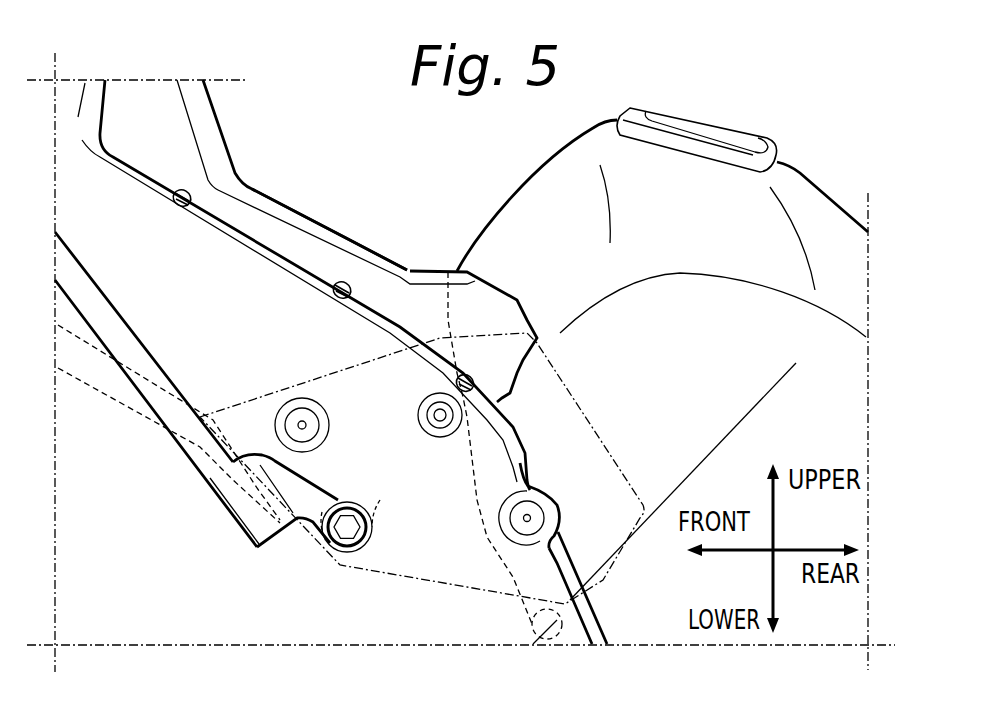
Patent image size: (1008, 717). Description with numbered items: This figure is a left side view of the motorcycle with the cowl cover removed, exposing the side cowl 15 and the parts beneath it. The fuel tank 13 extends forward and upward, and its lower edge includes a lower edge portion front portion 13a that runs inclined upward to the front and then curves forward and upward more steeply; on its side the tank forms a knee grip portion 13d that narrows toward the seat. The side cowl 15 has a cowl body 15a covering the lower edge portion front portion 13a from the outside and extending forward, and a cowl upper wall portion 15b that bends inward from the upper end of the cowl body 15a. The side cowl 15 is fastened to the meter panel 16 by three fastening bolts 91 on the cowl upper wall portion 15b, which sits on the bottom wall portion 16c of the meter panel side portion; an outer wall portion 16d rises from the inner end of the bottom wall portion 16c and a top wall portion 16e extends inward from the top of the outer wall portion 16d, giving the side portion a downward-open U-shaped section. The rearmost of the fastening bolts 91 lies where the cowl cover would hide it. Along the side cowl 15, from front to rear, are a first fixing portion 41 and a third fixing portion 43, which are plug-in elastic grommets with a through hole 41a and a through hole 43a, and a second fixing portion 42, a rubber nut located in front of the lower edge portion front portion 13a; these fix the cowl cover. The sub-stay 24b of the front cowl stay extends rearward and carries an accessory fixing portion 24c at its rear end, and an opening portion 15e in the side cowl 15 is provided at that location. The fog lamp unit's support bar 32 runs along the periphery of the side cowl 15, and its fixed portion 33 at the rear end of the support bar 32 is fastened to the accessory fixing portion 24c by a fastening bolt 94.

The fuel tank 13 is at (519, 200).
The lower edge portion front portion 13a is at (590, 620).
The knee grip portion 13d is at (838, 436).
The side cowl 15 is at (304, 285).
The cowl body 15a is at (273, 332).
The cowl upper wall portion 15b is at (257, 240).
The opening portion 15e is at (337, 560).
The meter panel 16 is at (286, 193).
The bottom wall portion 16c is at (290, 253).
The outer wall portion 16d is at (352, 258).
The top wall portion 16e is at (388, 255).
The sub-stay 24b is at (68, 372).
The accessory fixing portion 24c is at (360, 500).
The support bar 32 is at (200, 467).
The fixed portion 33 is at (313, 478).
The first fixing portion 41 is at (291, 394).
The through hole 41a is at (312, 417).
The second fixing portion 42 is at (422, 410).
The third fixing portion 43 is at (520, 535).
The through hole 43a is at (530, 512).
The fastening bolt 91 is at (186, 190).
The fastening bolt 94 is at (360, 530).